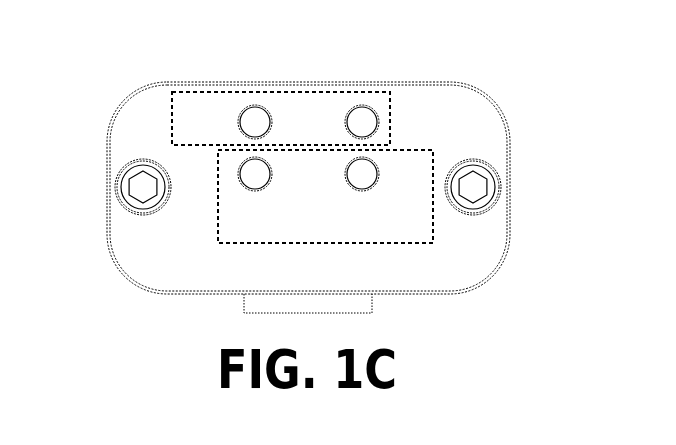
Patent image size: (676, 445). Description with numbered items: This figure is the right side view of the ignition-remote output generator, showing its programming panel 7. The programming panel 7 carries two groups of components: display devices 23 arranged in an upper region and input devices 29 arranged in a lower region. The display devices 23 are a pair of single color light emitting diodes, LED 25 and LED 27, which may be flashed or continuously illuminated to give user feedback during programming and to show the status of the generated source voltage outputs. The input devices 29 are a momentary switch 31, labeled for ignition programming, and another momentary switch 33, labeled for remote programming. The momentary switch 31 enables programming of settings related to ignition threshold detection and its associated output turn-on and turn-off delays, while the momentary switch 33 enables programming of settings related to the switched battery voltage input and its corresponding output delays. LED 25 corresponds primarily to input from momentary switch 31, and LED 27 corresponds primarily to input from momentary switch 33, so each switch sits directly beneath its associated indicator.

The programming panel 7 is at (149, 276).
The display devices 23 is at (172, 118).
The light emitting diode 25 is at (244, 119).
The light emitting diode 27 is at (351, 119).
The input devices 29 is at (433, 150).
The momentary switch 31 is at (270, 176).
The momentary switch 33 is at (377, 176).